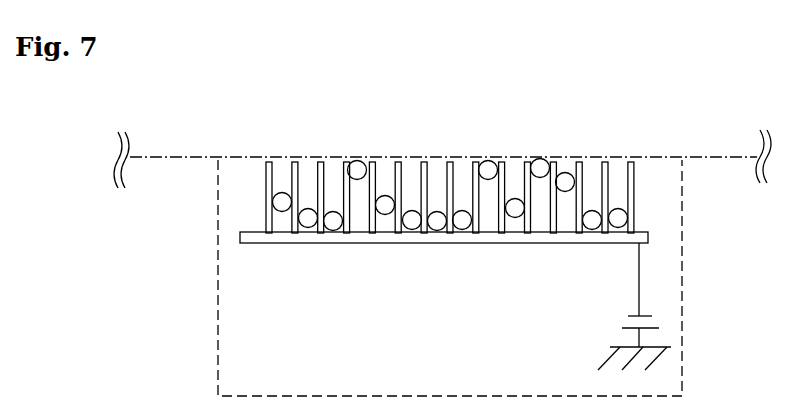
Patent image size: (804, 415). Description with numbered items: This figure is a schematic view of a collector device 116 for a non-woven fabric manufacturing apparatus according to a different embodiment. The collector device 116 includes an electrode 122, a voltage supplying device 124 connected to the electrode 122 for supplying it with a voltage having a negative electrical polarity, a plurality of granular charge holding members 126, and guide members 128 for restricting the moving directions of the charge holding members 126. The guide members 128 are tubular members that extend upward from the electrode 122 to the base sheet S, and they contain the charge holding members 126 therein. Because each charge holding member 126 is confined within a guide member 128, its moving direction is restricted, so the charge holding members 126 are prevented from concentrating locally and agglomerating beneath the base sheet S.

The base sheet S is at (713, 152).
The collector device 116 is at (683, 278).
The electrode 122 is at (453, 243).
The voltage supplying device 124 is at (628, 318).
The charge holding members 126 is at (282, 200).
The guide members 128 is at (265, 182).